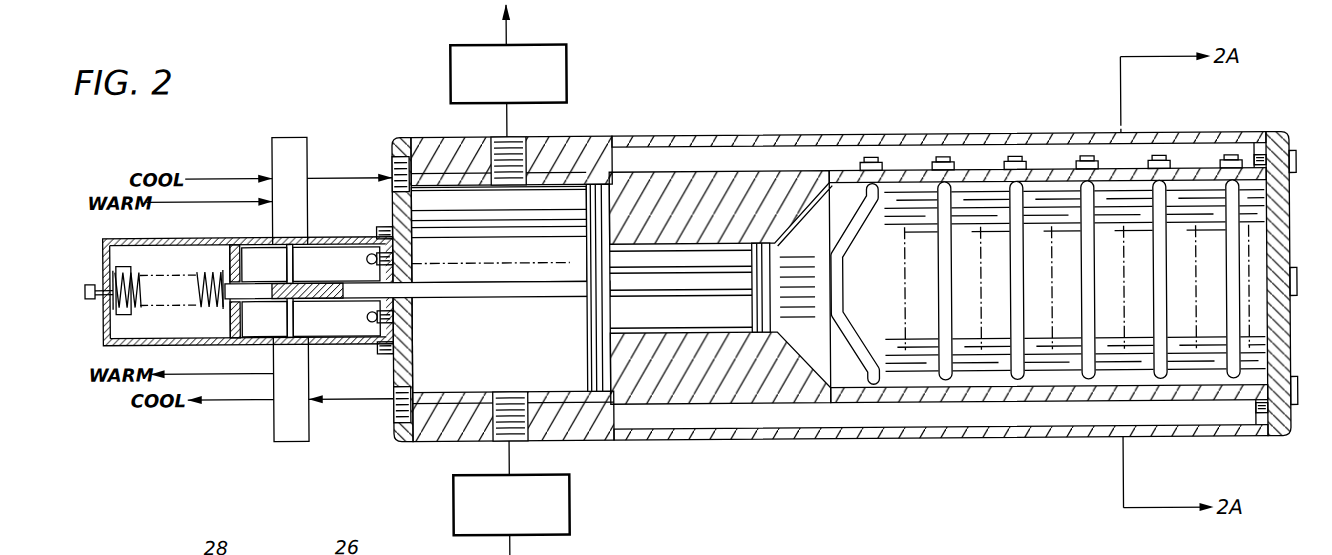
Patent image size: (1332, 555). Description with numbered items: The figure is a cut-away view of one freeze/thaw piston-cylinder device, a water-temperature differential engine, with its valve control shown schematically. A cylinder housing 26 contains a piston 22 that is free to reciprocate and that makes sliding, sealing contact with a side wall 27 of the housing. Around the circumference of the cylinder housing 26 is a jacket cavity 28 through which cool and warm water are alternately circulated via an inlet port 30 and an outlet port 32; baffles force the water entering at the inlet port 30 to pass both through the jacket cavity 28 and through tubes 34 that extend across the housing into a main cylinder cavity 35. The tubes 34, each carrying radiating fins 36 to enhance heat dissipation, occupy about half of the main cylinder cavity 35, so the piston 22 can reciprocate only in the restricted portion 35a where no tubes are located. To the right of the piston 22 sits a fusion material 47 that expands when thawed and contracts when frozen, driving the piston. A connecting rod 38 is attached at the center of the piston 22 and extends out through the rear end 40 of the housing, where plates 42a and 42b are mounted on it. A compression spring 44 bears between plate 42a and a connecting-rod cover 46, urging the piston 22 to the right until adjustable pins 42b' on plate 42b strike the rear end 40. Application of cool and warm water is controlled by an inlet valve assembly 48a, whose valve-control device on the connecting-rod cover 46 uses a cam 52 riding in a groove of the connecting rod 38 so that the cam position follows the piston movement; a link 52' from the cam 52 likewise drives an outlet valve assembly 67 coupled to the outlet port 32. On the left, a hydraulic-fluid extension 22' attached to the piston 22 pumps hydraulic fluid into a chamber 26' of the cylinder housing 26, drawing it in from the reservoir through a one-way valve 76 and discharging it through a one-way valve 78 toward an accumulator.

The piston 22 is at (745, 287).
The hydraulic-fluid extension 22' is at (578, 287).
The cylinder housing 26 is at (830, 270).
The chamber 26' is at (444, 344).
The side wall 27 is at (690, 345).
The jacket cavity 28 is at (698, 420).
The inlet port 30 is at (393, 165).
The outlet port 32 is at (393, 392).
The tubes 34 is at (1016, 252).
The main cylinder cavity 35 is at (1262, 252).
The restricted portion of the main cylinder cavity 35a is at (652, 334).
The fins 36 is at (865, 334).
The connecting rod 38 is at (512, 290).
The rear end of the cylinder housing 40 is at (412, 250).
The plate 42a is at (235, 314).
The plate 42b is at (343, 328).
The adjustable pins 42b' is at (343, 254).
The compression spring 44 is at (104, 304).
The connecting-rod cover 46 is at (105, 262).
The fusion material 47 is at (828, 356).
The inlet valve assembly 48a is at (308, 230).
The cam 52 is at (264, 264).
The link 52' is at (264, 318).
The outlet valve assembly 67 is at (308, 418).
The one-way valve 76 is at (568, 492).
The one-way valve 78 is at (568, 70).